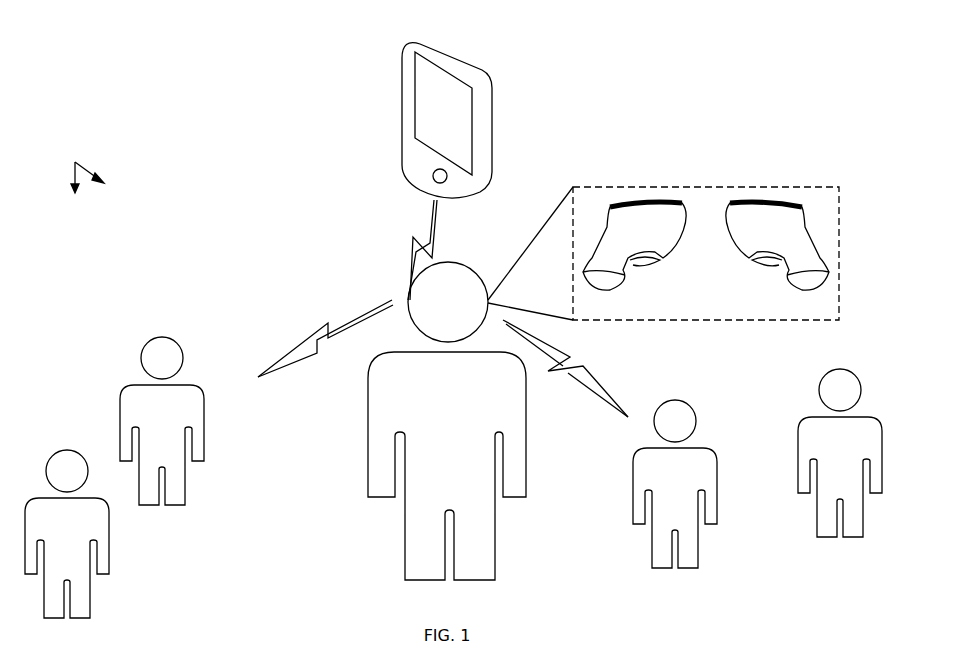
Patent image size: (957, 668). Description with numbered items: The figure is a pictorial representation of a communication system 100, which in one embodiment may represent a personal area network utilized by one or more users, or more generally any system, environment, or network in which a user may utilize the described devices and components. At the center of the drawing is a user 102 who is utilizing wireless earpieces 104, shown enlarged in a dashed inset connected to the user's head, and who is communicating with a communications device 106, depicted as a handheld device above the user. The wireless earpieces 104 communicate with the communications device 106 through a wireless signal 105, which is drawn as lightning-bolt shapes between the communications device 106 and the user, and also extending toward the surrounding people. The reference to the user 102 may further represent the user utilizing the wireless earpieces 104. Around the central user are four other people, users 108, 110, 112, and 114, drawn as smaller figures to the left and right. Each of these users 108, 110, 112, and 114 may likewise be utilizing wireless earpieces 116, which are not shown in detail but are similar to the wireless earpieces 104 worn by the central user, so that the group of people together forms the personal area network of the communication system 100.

The communication system 100 is at (157, 55).
The user 102 is at (438, 402).
The wireless earpieces 104 is at (680, 205).
The wireless signal 105 is at (342, 330).
The communications device 106 is at (491, 87).
The user 108 is at (153, 414).
The user 110 is at (57, 533).
The user 112 is at (665, 476).
The user 114 is at (830, 443).
The wireless earpieces 116 is at (83, 167).